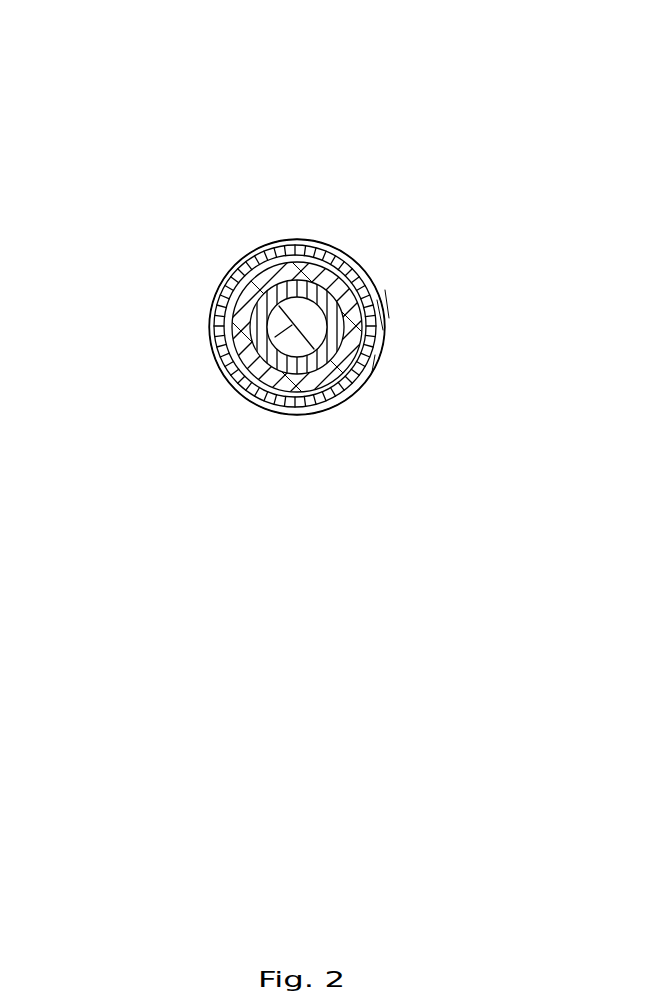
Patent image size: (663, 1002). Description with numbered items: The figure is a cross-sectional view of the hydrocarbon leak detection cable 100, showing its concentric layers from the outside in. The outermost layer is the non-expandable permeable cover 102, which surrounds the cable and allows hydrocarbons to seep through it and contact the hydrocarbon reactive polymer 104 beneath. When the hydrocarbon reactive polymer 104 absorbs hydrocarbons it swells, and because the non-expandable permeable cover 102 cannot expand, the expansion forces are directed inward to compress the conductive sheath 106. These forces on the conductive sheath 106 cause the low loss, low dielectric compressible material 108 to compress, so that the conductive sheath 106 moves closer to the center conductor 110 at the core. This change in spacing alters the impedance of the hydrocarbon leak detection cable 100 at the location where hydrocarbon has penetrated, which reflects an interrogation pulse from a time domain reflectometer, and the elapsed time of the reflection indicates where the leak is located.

The hydrocarbon leak detection cable 100 is at (467, 117).
The non-expandable permeable cover 102 is at (297, 238).
The hydrocarbon reactive polymer 104 is at (366, 271).
The conductive sheath 106 is at (492, 330).
The low loss, low dielectric compressible material 108 is at (292, 365).
The center conductor 110 is at (290, 322).